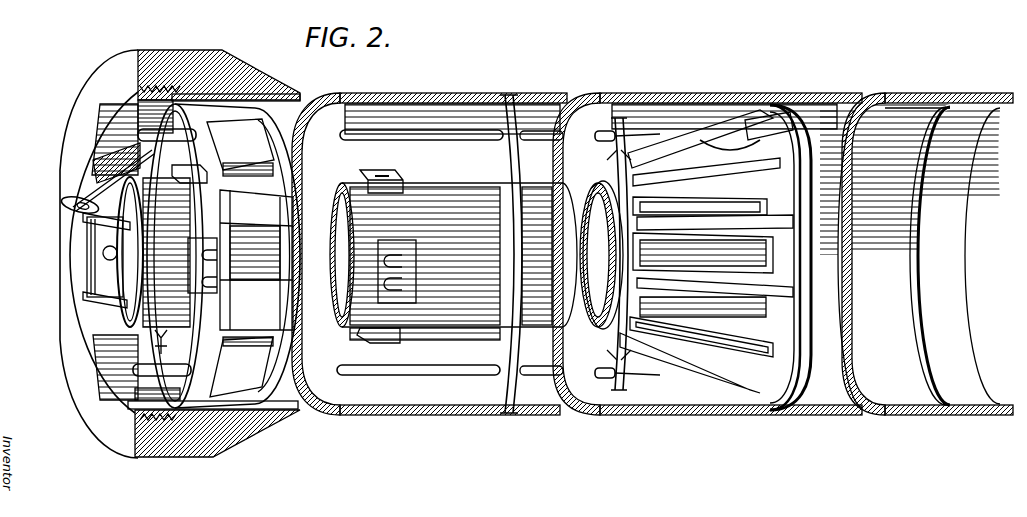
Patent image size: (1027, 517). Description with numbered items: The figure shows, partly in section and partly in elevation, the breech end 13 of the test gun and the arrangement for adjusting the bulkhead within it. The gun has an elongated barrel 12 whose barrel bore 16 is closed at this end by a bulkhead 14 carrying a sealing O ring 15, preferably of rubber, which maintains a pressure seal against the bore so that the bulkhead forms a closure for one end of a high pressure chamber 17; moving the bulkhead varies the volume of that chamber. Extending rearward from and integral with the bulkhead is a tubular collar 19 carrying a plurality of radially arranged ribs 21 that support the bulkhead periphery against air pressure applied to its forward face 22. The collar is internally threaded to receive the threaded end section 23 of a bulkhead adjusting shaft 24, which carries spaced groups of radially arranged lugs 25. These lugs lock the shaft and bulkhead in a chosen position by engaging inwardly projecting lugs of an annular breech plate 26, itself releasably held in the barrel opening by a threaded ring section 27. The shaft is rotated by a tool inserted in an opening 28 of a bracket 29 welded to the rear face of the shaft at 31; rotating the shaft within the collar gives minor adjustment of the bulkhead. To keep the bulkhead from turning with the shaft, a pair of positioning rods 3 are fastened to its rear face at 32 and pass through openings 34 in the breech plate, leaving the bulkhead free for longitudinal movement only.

The positioning rods 3 is at (340, 137).
The barrel 12 is at (675, 93).
The breech end 13 is at (123, 440).
The bulkhead 14 is at (793, 170).
The sealing O ring 15 is at (817, 203).
The barrel bore 16 is at (663, 407).
The high pressure chamber 17 is at (886, 293).
The tubular collar 19 is at (661, 216).
The radially arranged ribs 21 is at (717, 293).
The forward face 22 is at (817, 350).
The threaded end section 23 is at (603, 333).
The bulkhead adjusting shaft 24 is at (447, 330).
The radially arranged lugs 25 is at (190, 237).
The annular breech plate 26 is at (264, 306).
The threaded ring section 27 is at (118, 106).
The opening 28 is at (75, 207).
The bracket 29 is at (120, 213).
The weld 31 is at (113, 238).
The rod fastening 32 is at (742, 149).
The openings 34 is at (188, 143).